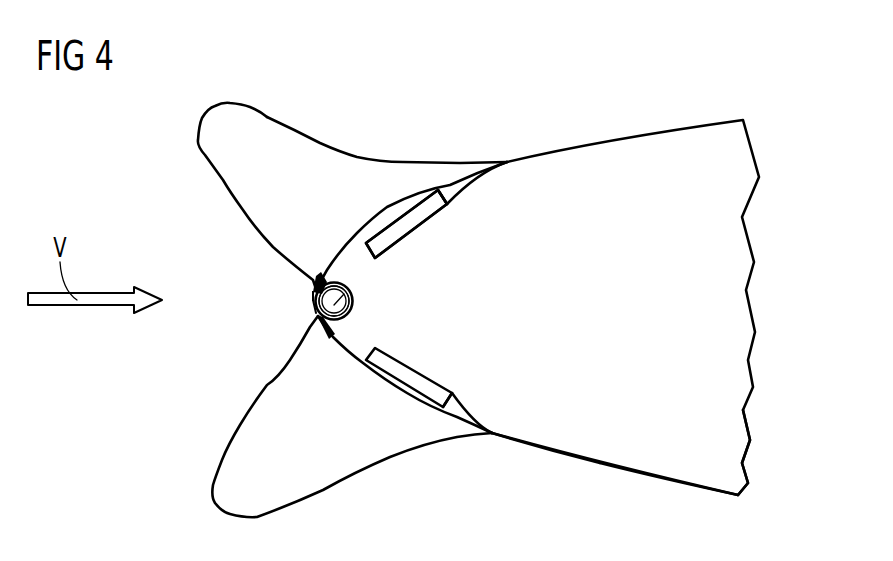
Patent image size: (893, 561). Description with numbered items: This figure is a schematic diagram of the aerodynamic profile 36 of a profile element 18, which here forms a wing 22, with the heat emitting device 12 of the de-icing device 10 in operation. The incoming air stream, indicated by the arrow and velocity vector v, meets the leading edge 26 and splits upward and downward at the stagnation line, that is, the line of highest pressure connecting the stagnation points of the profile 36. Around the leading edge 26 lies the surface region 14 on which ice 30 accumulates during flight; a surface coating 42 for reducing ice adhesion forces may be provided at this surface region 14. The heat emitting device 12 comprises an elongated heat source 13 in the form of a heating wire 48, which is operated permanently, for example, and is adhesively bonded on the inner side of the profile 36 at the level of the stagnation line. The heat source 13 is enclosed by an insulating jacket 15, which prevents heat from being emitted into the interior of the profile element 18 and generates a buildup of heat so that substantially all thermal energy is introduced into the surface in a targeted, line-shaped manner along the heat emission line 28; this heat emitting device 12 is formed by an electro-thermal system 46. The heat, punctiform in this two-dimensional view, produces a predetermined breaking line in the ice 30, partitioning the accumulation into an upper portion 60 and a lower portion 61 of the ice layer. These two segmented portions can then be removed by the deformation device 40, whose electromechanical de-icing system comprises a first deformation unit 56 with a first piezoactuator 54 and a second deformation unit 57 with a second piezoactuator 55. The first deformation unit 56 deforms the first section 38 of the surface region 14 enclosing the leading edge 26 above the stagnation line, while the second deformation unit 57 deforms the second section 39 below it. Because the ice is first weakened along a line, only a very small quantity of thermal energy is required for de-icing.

The device 10 is at (625, 307).
The heat emitting device 12 is at (384, 289).
The elongated heat source 13 is at (268, 346).
The surface region 14 is at (408, 225).
The insulating jacket 15 is at (392, 313).
The profile element 18 is at (669, 507).
The wing 22 is at (771, 444).
The leading edge 26 is at (276, 276).
The heat emission line 28 is at (225, 323).
The ice 30 is at (387, 132).
The aerodynamic profile 36 is at (546, 485).
The first section 38 is at (406, 189).
The second section 39 is at (304, 366).
The deformation device 40 is at (439, 298).
The surface coating 42 is at (405, 385).
The electro-thermal system 46 is at (461, 297).
The heating wire 48 is at (360, 312).
The first piezoactuator 54 is at (473, 222).
The second piezoactuator 55 is at (475, 411).
The first deformation unit 56 is at (505, 183).
The second deformation unit 57 is at (504, 393).
The upper portion 60 is at (257, 179).
The lower portion 61 is at (352, 424).